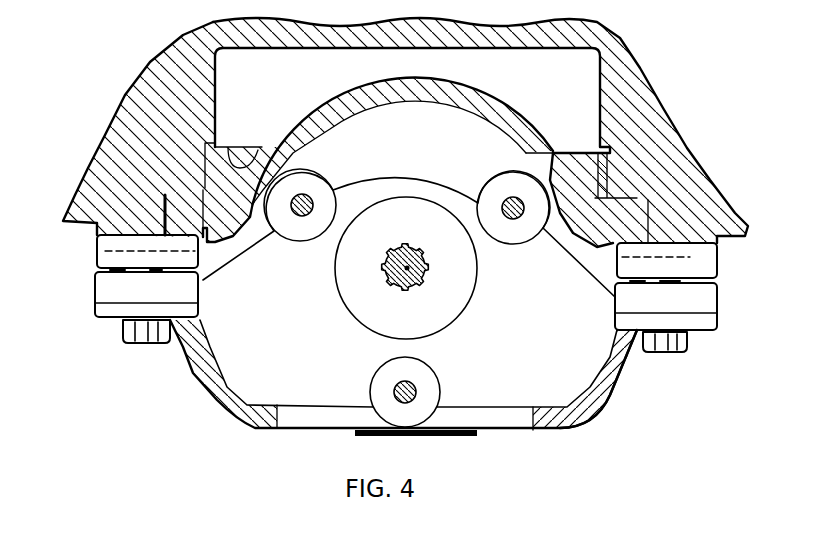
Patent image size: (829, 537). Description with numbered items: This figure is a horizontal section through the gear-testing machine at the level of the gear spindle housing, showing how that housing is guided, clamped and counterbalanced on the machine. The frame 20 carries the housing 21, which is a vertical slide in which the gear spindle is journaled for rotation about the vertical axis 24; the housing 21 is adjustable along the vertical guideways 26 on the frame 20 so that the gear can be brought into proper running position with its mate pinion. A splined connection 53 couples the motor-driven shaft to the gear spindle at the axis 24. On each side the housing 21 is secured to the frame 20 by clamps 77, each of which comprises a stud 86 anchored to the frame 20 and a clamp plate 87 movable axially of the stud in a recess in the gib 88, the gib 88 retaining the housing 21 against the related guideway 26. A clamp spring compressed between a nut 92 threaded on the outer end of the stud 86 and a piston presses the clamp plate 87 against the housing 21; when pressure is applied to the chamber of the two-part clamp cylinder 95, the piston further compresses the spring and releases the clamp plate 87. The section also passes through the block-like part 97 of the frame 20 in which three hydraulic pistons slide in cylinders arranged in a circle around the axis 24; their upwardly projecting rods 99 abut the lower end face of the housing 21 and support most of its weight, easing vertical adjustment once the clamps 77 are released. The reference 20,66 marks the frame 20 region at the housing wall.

The frame 20 is at (170, 144).
The housing 21 is at (300, 118).
The vertical axis 24 is at (403, 292).
The vertical guideways 26 is at (203, 190).
The splined connection 53 is at (409, 270).
The housing wall 66 is at (612, 392).
The clamps 77 is at (207, 296).
The stud 86 is at (100, 276).
The clamp plate 87 is at (690, 258).
The gib 88 is at (97, 252).
The nut 92 is at (130, 332).
The clamp cylinder 95 is at (100, 308).
The block-like part 97 is at (535, 353).
The rods 99 is at (306, 200).